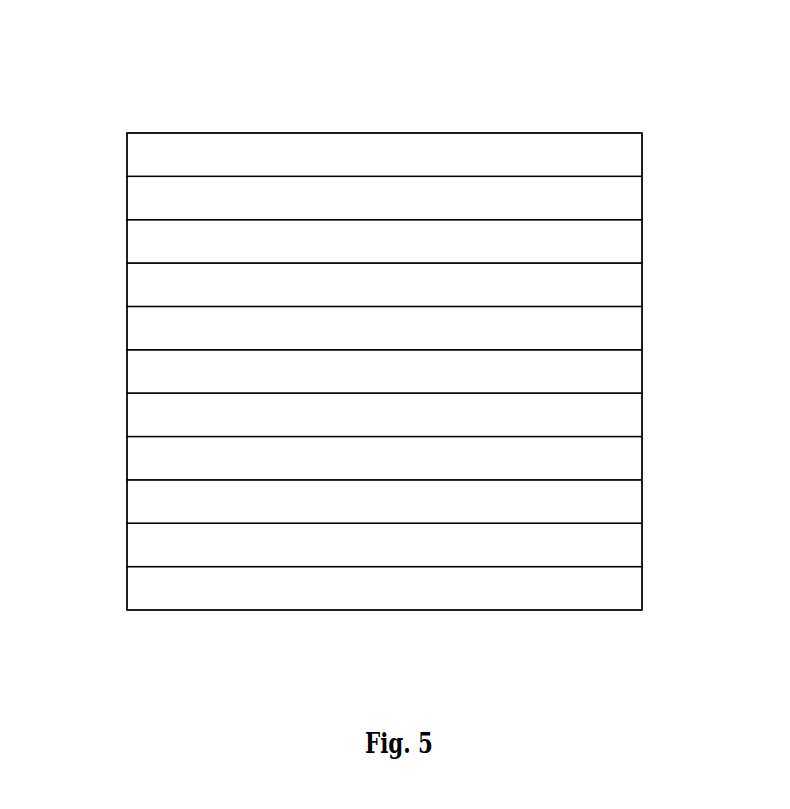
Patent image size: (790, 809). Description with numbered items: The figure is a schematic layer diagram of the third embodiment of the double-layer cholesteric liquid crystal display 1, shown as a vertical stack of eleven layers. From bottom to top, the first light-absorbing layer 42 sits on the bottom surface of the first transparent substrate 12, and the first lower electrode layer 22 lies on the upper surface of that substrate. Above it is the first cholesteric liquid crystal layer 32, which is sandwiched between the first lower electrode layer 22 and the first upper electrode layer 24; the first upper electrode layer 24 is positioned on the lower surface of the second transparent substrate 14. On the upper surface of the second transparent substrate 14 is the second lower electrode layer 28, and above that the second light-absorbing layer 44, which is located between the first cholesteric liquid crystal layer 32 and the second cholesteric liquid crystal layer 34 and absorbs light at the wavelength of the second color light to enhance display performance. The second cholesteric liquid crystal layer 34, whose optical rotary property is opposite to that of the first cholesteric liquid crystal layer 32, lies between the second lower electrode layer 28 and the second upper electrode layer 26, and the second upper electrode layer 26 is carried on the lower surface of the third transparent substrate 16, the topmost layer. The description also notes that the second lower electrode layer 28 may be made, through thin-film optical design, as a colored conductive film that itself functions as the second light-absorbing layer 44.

The double-layer cholesteric liquid crystal display 1 is at (105, 122).
The third transparent substrate 16 is at (625, 158).
The second upper electrode layer 26 is at (625, 202).
The second cholesteric liquid crystal layer 34 is at (625, 242).
The second lower electrode layer 28 is at (625, 287).
The second light-absorbing layer 44 is at (625, 323).
The second transparent substrate 14 is at (625, 358).
The first upper electrode layer 24 is at (625, 398).
The first cholesteric liquid crystal layer 32 is at (625, 452).
The first lower electrode layer 22 is at (625, 493).
The first transparent substrate 12 is at (625, 537).
The first light-absorbing layer 42 is at (625, 585).